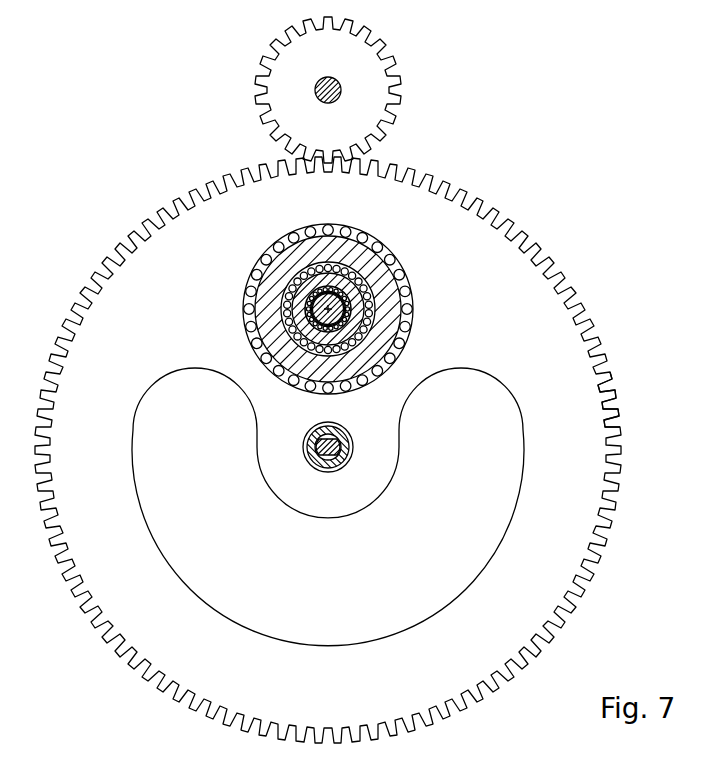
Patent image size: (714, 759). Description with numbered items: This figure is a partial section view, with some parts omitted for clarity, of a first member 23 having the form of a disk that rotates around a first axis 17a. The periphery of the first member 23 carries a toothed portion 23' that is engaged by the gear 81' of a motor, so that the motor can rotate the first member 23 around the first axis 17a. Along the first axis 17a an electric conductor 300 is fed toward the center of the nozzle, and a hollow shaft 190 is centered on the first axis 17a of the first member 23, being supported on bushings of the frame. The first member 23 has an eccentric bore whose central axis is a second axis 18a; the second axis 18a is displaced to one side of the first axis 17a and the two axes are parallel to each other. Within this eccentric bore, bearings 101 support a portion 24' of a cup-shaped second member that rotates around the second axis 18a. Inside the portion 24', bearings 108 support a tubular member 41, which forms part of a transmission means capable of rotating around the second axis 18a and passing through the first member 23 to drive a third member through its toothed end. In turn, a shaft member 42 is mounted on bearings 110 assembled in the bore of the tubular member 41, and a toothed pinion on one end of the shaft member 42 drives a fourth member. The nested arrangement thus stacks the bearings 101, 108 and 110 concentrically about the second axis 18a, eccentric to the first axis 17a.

The gear 81' is at (375, 90).
The first member 23 is at (341, 450).
The toothed portion 23' is at (635, 386).
The bearings 101 is at (395, 266).
The portion of second member 24' is at (364, 309).
The bearings 108 is at (306, 284).
The tubular member 41 is at (353, 328).
The bearings 110 is at (331, 288).
The shaft member 42 is at (317, 297).
The second axis 18a is at (323, 312).
The shaft 190 is at (344, 432).
The electric conductor 300 is at (340, 465).
The first axis 17a is at (320, 463).